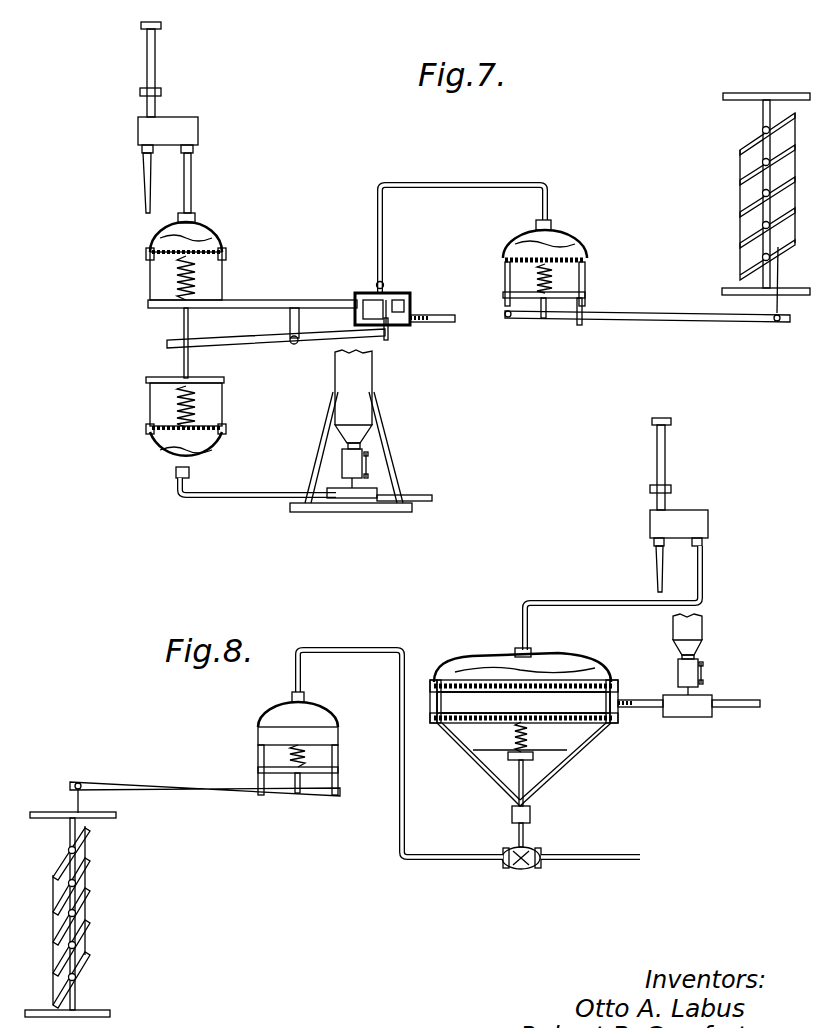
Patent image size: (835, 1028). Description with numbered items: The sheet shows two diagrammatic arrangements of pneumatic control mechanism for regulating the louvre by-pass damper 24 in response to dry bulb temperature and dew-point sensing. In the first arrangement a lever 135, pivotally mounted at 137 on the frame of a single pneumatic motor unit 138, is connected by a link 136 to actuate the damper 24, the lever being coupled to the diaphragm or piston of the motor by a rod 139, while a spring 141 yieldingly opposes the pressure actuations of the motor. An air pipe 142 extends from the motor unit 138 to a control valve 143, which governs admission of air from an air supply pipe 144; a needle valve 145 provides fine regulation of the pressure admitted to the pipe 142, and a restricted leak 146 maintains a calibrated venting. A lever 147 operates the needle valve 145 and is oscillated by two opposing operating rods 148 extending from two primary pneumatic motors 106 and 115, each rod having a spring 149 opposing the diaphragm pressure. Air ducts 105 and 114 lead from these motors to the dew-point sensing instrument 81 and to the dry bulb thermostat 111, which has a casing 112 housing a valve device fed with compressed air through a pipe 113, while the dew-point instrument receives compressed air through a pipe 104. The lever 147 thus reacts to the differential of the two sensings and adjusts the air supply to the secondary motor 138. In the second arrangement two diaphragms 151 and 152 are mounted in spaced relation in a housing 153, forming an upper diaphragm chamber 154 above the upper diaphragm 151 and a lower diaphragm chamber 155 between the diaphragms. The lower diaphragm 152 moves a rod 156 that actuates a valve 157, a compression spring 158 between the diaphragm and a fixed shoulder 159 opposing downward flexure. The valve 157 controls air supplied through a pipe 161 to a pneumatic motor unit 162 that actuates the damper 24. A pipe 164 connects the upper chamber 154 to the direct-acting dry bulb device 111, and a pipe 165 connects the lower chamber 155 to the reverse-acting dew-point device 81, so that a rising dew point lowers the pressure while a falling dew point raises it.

In FIG. 7, the dry bulb thermostat 111 is at (153, 71).
In FIG. 8, the dry bulb thermostat 111 is at (663, 458).
In FIG. 7, the thermostat casing 112 is at (188, 128).
In FIG. 8, the thermostat casing 112 is at (700, 522).
In FIG. 7, the compressed air pipe 113 is at (146, 200).
In FIG. 8, the compressed air pipe 113 is at (655, 565).
In FIG. 7, the control line 114 is at (192, 190).
In FIG. 7, the pneumatic motor 115 is at (146, 258).
In FIG. 7, the spring 149 is at (178, 282).
In FIG. 7, the operating rod 148 is at (182, 326).
In FIG. 7, the lever 147 is at (320, 352).
In FIG. 7, the pneumatic motor element 106 is at (150, 455).
In FIG. 7, the air duct 105 is at (265, 482).
In FIG. 7, the dew-point sensing instrument 81 is at (365, 382).
In FIG. 8, the dew-point sensing instrument 81 is at (702, 628).
In FIG. 7, the compressed air pipe 104 is at (433, 498).
In FIG. 8, the compressed air pipe 104 is at (740, 702).
In FIG. 7, the air pipe 142 is at (470, 187).
In FIG. 7, the restricted leak 146 is at (373, 285).
In FIG. 7, the control valve 143 is at (398, 296).
In FIG. 7, the air supply pipe 144 is at (455, 322).
In FIG. 7, the needle valve 145 is at (390, 332).
In FIG. 7, the pneumatic motor unit 138 is at (584, 260).
In FIG. 7, the spring 141 is at (550, 283).
In FIG. 7, the pivot 137 is at (506, 318).
In FIG. 7, the rod 139 is at (546, 312).
In FIG. 7, the lever 135 is at (660, 320).
In FIG. 7, the link 136 is at (775, 330).
In FIG. 7, the louvre by-pass damper 24 is at (735, 176).
In FIG. 8, the louvre by-pass damper 24 is at (95, 905).
In FIG. 8, the pipe 164 is at (520, 610).
In FIG. 8, the upper diaphragm chamber 154 is at (470, 668).
In FIG. 8, the lower diaphragm chamber 155 is at (606, 690).
In FIG. 8, the housing 153 is at (430, 698).
In FIG. 8, the upper diaphragm 151 is at (523, 700).
In FIG. 8, the lower diaphragm 152 is at (575, 718).
In FIG. 8, the rod 156 is at (523, 783).
In FIG. 8, the compression spring 158 is at (530, 742).
In FIG. 8, the fixed shoulder 159 is at (508, 761).
In FIG. 8, the valve 157 is at (515, 848).
In FIG. 8, the pipe 161 is at (445, 862).
In FIG. 8, the pipe 165 is at (650, 718).
In FIG. 8, the pneumatic motor unit 162 is at (255, 723).